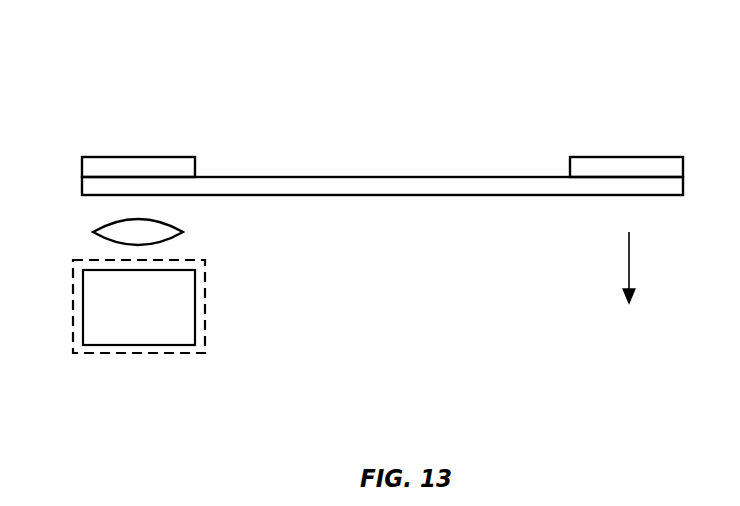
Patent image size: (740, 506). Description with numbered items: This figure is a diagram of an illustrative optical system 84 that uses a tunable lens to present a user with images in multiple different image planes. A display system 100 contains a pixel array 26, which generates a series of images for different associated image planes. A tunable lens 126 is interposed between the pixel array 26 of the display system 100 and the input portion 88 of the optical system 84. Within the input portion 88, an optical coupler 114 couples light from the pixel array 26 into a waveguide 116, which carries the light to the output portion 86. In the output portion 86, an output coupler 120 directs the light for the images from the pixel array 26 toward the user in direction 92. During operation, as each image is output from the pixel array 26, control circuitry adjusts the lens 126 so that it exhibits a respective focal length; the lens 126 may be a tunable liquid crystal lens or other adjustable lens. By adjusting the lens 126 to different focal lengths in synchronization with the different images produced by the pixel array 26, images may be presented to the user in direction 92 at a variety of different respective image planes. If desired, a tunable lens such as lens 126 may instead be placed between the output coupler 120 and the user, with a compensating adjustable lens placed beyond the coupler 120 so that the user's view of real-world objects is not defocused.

The input portion 88 is at (135, 78).
The optical system 84 is at (401, 78).
The output portion 86 is at (623, 78).
The optical coupler 114 is at (153, 157).
The output coupler 120 is at (654, 157).
The waveguide 116 is at (420, 195).
The tunable lens 126 is at (93, 232).
The pixel array 26 is at (203, 331).
The display system 100 is at (108, 353).
The direction 92 is at (629, 263).